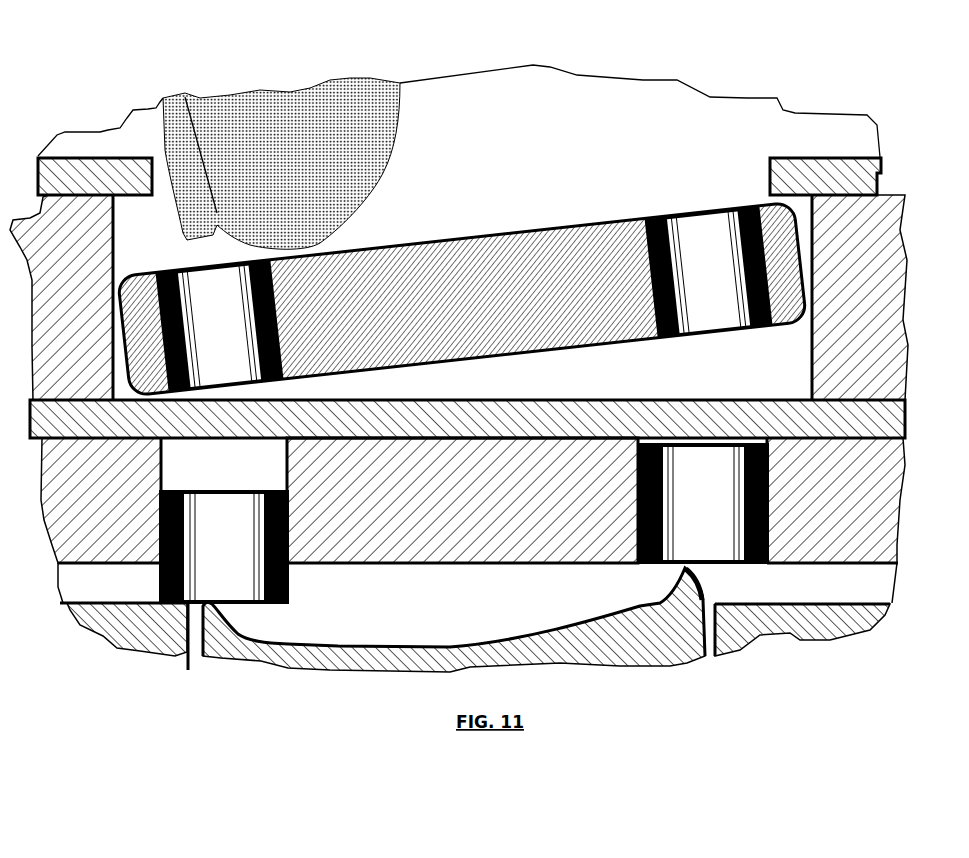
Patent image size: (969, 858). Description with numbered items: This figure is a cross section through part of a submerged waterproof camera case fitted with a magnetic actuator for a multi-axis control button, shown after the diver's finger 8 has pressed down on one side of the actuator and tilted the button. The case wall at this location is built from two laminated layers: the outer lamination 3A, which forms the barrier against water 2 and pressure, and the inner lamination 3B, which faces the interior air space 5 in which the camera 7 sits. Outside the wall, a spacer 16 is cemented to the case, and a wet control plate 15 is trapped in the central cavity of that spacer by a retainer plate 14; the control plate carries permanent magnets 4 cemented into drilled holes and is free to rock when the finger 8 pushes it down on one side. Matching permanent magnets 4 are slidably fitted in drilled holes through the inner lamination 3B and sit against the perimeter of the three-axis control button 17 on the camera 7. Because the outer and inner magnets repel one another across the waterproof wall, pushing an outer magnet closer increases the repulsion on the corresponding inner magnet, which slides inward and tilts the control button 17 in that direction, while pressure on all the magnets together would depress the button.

The water 2 is at (418, 105).
The outer lamination 3A is at (865, 445).
The inner lamination 3B is at (798, 522).
The permanent magnets 4 is at (358, 243).
The air space 5 is at (735, 584).
The camera 7 is at (160, 631).
The finger 8 is at (265, 155).
The retainer plate 14 is at (78, 170).
The wet control plate 15 is at (450, 290).
The spacer 16 is at (97, 228).
The control button 17 is at (678, 619).